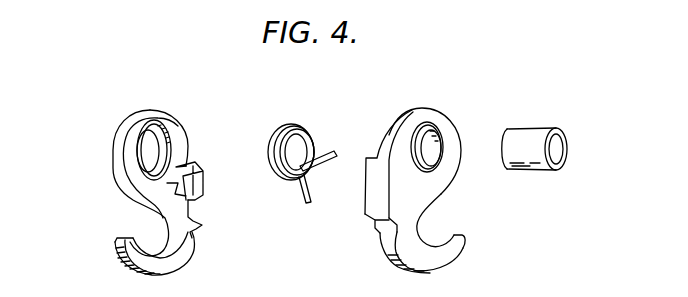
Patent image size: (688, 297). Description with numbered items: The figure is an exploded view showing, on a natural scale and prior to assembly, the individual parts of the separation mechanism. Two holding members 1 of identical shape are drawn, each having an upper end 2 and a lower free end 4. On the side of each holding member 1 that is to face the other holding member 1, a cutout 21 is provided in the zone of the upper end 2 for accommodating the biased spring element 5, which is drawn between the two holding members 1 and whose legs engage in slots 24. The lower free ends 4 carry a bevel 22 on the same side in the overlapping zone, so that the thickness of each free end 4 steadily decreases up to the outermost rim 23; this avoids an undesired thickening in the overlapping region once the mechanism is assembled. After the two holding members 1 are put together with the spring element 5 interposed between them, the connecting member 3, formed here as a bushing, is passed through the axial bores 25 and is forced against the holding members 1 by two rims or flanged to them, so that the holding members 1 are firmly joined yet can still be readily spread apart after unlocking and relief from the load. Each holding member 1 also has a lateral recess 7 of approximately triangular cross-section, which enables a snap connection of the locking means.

The holding member 1 is at (143, 202).
The upper end 2 is at (129, 112).
The connecting member 3 is at (546, 128).
The lower free end 4 is at (130, 265).
The biased spring element 5 is at (295, 124).
The lateral recess 7 is at (204, 221).
The cutout 21 is at (163, 127).
The bevel 22 is at (182, 256).
The outermost rim 23 is at (117, 240).
The slot 24 is at (205, 188).
The axial bore 25 is at (147, 148).